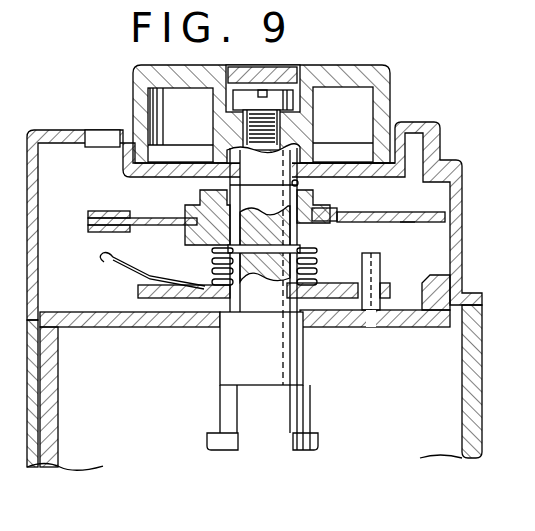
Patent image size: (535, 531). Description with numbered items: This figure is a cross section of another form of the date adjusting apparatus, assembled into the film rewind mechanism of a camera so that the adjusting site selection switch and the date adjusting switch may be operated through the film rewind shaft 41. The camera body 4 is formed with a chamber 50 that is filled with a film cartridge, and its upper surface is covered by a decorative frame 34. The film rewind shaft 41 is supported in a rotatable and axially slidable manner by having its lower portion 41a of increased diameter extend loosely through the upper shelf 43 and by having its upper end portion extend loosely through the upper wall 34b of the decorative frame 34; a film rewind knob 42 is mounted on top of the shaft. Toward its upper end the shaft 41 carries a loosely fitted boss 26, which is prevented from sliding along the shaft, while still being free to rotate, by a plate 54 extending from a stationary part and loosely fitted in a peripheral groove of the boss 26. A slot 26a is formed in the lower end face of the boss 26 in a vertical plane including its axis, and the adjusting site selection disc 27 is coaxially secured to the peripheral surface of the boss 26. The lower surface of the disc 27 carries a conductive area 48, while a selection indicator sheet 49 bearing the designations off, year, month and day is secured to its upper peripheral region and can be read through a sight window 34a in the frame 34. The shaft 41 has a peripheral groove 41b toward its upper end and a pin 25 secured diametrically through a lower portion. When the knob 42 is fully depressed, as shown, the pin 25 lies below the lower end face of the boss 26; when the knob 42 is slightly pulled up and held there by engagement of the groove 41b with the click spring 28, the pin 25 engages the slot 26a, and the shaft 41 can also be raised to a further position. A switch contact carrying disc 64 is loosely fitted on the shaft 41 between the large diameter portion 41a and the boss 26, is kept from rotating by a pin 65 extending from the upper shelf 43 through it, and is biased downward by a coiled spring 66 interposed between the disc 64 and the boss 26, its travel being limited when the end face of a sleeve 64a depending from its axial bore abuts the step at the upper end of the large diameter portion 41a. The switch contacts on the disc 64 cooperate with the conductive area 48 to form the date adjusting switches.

The camera body 4 is at (50, 400).
The pin 25 is at (213, 253).
The boss 26 is at (187, 233).
The slot 26a is at (316, 222).
The adjusting site selection disc 27 is at (409, 222).
The click spring 28 is at (300, 194).
The decorative frame 34 is at (452, 155).
The sight window 34a is at (96, 130).
The upper wall 34b is at (362, 162).
The film rewind shaft 41 is at (213, 392).
The lower portion of increased diameter 41a is at (242, 352).
The peripheral groove 41b is at (232, 184).
The film rewind knob 42 is at (375, 78).
The upper shelf 43 is at (120, 322).
The conductive area 48 is at (107, 232).
The selection indicator sheet 49 is at (100, 212).
The chamber 50 is at (396, 414).
The plate 54 is at (355, 208).
The switch contact carrying disc 64 is at (138, 288).
The sleeve 64a is at (306, 303).
The pin 65 is at (372, 270).
The coiled spring 66 is at (312, 270).